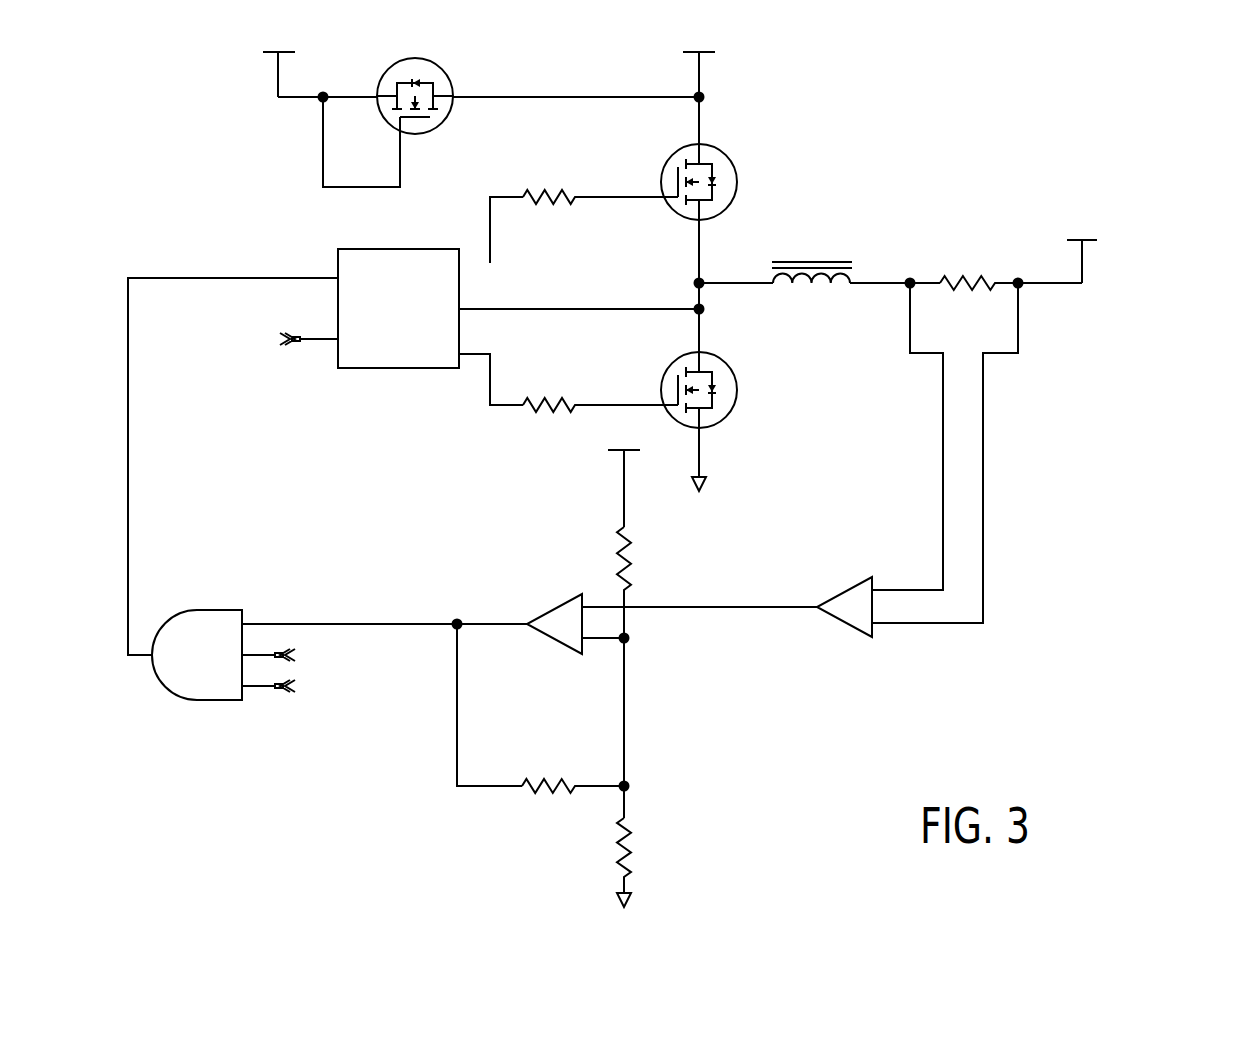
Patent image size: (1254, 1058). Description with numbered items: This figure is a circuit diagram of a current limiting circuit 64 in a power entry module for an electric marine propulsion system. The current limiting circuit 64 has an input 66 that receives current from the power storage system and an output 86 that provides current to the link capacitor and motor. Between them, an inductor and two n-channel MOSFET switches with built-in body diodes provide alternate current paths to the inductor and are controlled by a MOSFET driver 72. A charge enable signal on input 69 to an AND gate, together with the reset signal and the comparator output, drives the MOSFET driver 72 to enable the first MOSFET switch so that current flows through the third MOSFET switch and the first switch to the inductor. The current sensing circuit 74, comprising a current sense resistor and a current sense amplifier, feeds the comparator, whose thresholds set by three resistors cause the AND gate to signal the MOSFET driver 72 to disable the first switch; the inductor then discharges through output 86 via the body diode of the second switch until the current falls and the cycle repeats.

The current limiting circuit 64 is at (1019, 105).
The input 66 is at (302, 99).
The input 69 is at (271, 655).
The MOSFET driver 72 is at (368, 248).
The current sensing circuit 74 is at (1031, 245).
The output 86 is at (1053, 284).